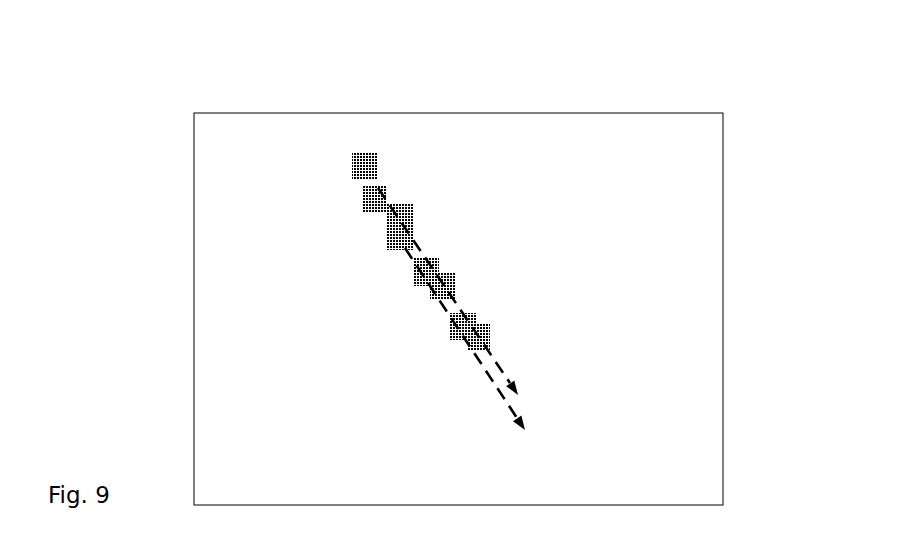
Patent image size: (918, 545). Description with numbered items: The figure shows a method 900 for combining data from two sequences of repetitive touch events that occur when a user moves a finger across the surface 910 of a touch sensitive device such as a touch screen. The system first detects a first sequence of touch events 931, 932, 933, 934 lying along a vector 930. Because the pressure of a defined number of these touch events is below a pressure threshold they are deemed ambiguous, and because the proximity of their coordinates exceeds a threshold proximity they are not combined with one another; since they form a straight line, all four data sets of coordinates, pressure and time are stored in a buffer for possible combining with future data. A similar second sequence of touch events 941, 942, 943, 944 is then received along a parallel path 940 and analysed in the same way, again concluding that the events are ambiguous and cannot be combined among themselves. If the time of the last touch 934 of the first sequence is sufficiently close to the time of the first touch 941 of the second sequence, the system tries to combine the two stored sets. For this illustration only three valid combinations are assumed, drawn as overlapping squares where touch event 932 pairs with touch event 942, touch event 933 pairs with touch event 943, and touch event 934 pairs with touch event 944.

The arrangement of elements 900 is at (149, 91).
The field / substrate region 910 is at (723, 308).
The first touch event of the first sequence 931 is at (365, 207).
The second touch event of the first sequence 932 is at (388, 245).
The third touch event of the first sequence 933 is at (413, 288).
The fourth touch event of the first sequence 934 is at (452, 342).
The first touch event of the second sequence 941 is at (375, 157).
The second touch event of the second sequence 942 is at (412, 207).
The third touch event of the second sequence 943 is at (455, 277).
The fourth touch event of the second sequence 944 is at (487, 325).
The vector 930 is at (503, 400).
The second direction / path of second set 940 is at (500, 367).